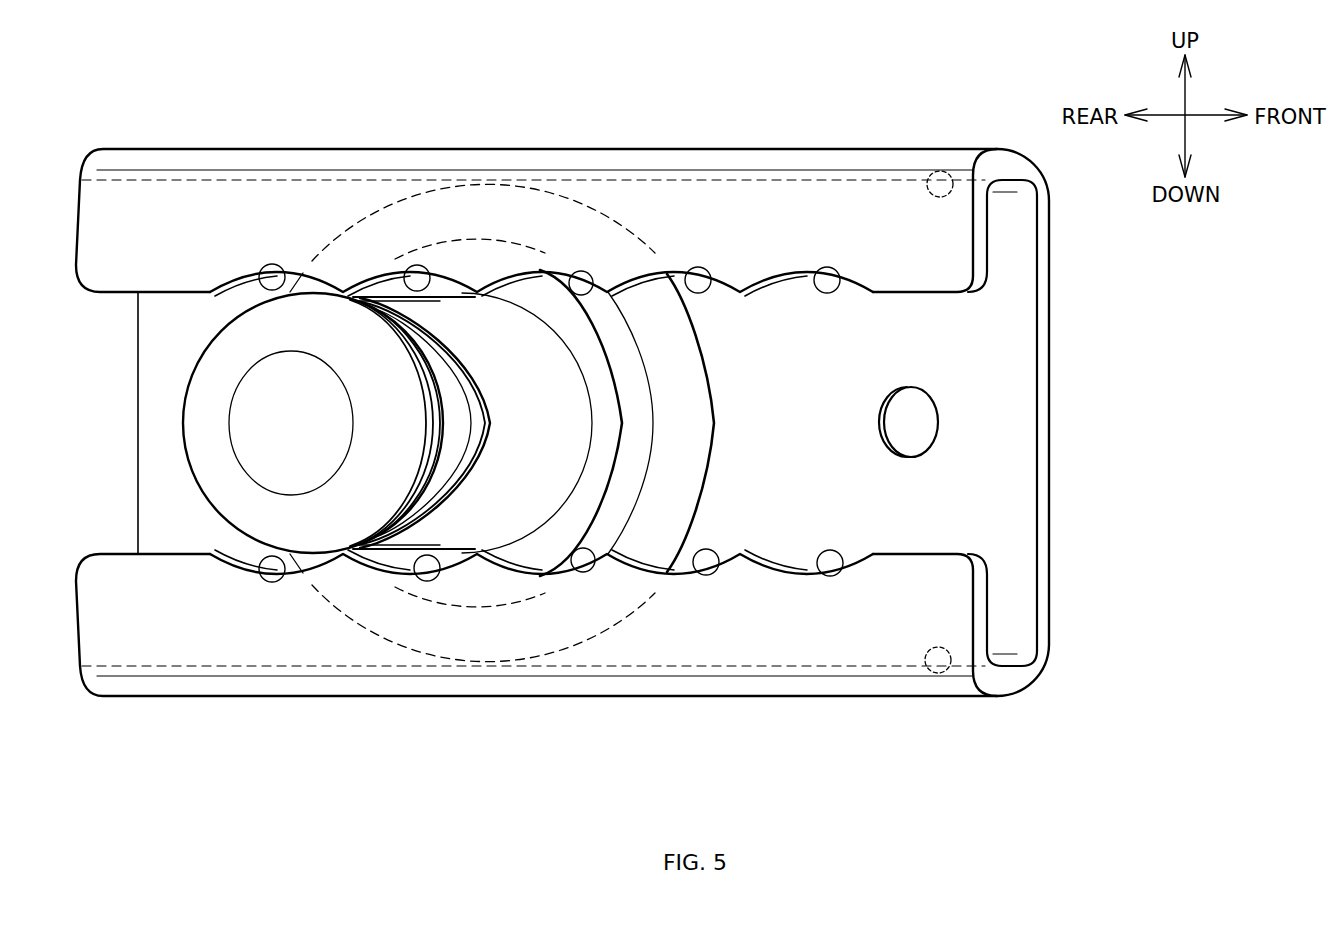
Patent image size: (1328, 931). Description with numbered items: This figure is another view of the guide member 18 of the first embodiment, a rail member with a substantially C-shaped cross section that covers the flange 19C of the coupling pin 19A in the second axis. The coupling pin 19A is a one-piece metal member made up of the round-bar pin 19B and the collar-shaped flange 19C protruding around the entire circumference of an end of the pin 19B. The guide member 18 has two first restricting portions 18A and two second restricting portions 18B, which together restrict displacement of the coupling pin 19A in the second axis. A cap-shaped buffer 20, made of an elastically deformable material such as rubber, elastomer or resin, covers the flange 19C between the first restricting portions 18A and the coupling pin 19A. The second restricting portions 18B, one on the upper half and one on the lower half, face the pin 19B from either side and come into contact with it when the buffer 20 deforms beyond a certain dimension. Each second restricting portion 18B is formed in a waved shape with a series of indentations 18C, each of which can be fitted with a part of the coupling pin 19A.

The guide member 18 is at (881, 148).
The first restricting portion 18A is at (953, 172).
The second restricting portion 18B is at (930, 273).
The indentation 18C is at (252, 270).
The coupling pin 19A is at (390, 533).
The pin 19B is at (493, 522).
The flange 19C is at (568, 497).
The buffer 20 is at (648, 540).